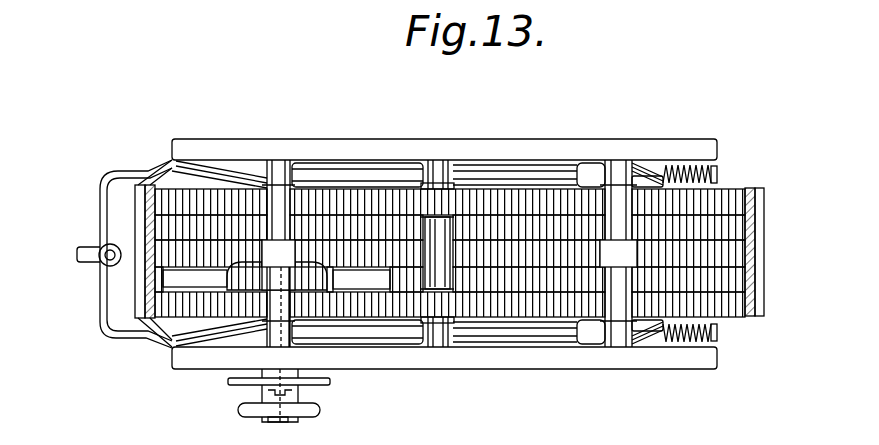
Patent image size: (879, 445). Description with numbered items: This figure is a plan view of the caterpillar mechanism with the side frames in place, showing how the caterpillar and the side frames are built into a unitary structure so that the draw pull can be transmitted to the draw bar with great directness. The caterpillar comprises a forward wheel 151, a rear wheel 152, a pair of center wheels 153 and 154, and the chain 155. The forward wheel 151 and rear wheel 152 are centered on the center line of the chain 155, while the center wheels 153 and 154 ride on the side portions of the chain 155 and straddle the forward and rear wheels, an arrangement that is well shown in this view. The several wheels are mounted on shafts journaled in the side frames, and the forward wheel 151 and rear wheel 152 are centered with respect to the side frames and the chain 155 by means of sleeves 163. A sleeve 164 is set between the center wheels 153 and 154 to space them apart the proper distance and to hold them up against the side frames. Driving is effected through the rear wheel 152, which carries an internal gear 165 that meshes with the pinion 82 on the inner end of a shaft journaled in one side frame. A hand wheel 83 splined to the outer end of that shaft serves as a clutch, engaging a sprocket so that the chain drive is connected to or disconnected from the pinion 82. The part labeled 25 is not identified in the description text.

The housing 25 is at (108, 292).
The pinion 82 is at (277, 272).
The hand wheel 83 is at (312, 408).
The forward wheel 151 is at (732, 248).
The rear wheel 152 is at (178, 247).
The center wheel 153 is at (481, 300).
The center wheel 154 is at (472, 202).
The chain 155 is at (753, 186).
The sleeve 163 is at (277, 202).
The sleeve 164 is at (433, 247).
The internal gear 165 is at (190, 277).